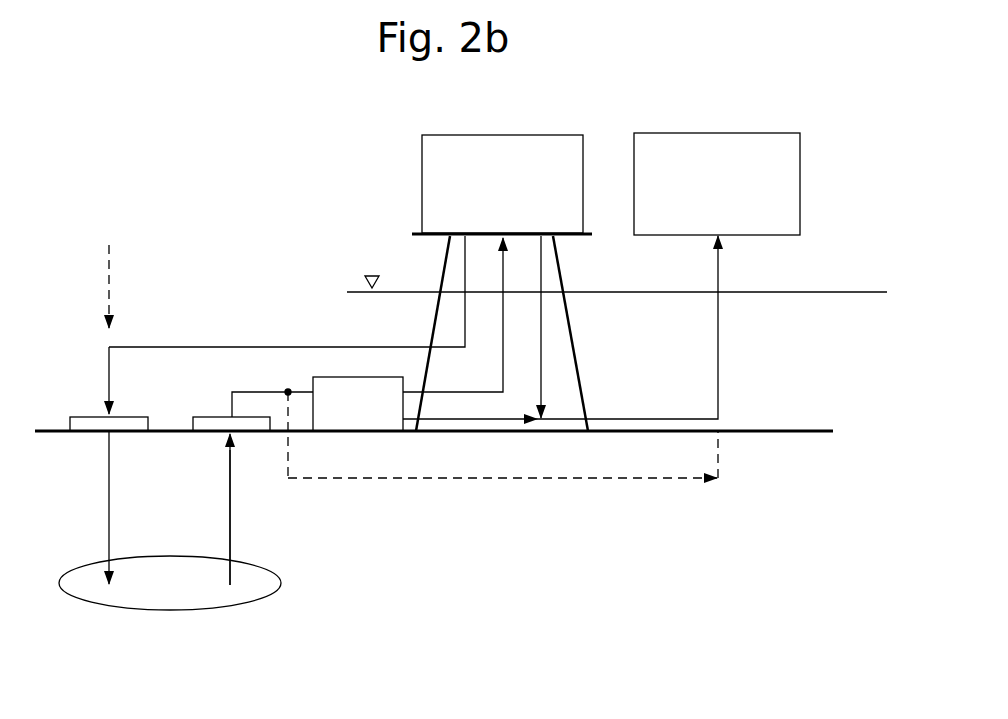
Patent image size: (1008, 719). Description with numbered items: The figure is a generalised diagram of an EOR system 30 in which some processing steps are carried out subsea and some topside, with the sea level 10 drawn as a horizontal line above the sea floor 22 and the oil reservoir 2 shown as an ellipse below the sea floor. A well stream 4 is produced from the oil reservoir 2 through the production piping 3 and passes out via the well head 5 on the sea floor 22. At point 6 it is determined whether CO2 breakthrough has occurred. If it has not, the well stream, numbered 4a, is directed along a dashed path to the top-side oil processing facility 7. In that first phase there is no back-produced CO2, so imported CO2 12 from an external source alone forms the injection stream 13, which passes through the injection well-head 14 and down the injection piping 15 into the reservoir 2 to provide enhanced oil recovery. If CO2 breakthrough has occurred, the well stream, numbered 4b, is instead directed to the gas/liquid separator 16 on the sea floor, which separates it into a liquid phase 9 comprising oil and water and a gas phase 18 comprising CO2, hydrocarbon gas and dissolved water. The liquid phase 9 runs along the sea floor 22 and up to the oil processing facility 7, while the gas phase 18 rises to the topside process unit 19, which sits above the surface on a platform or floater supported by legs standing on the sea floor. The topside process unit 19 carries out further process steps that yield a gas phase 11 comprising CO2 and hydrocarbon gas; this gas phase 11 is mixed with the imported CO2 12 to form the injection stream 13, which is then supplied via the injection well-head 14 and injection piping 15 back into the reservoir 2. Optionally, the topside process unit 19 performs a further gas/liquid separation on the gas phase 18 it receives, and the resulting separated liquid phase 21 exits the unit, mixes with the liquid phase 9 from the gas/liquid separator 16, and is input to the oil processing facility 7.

The oil reservoir 2 is at (170, 600).
The production piping 3 is at (232, 505).
The well stream 4 is at (232, 538).
The well stream 4a is at (560, 479).
The well stream 4b is at (303, 390).
The well head 5 is at (207, 433).
The point 6 is at (288, 390).
The oil processing facility 7 is at (693, 147).
The liquid phase 9 is at (465, 421).
The sea level 10 is at (852, 291).
The gas phase 11 is at (193, 347).
The imported CO2 12 is at (108, 268).
The injection stream 13 is at (108, 360).
The injection well-head 14 is at (85, 433).
The injection piping 15 is at (108, 528).
The gas/liquid separator 16 is at (377, 421).
The gas phase 18 is at (504, 363).
The topside process unit 19 is at (440, 172).
The separated liquid phase 21 is at (543, 318).
The sea floor 22 is at (782, 431).
The EOR system 30 is at (613, 102).